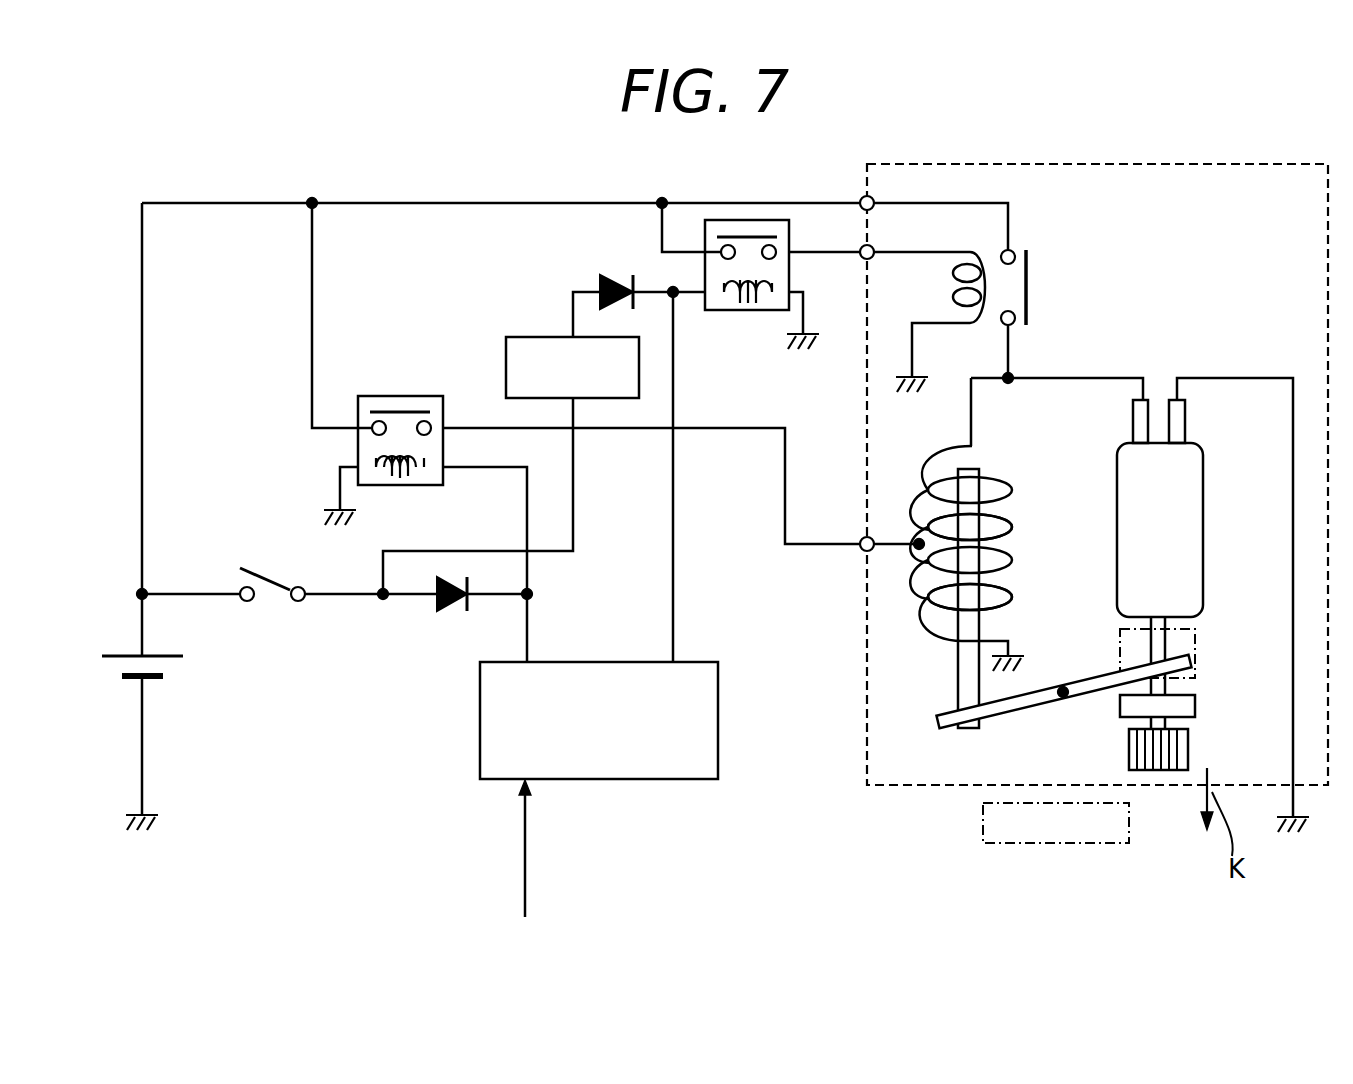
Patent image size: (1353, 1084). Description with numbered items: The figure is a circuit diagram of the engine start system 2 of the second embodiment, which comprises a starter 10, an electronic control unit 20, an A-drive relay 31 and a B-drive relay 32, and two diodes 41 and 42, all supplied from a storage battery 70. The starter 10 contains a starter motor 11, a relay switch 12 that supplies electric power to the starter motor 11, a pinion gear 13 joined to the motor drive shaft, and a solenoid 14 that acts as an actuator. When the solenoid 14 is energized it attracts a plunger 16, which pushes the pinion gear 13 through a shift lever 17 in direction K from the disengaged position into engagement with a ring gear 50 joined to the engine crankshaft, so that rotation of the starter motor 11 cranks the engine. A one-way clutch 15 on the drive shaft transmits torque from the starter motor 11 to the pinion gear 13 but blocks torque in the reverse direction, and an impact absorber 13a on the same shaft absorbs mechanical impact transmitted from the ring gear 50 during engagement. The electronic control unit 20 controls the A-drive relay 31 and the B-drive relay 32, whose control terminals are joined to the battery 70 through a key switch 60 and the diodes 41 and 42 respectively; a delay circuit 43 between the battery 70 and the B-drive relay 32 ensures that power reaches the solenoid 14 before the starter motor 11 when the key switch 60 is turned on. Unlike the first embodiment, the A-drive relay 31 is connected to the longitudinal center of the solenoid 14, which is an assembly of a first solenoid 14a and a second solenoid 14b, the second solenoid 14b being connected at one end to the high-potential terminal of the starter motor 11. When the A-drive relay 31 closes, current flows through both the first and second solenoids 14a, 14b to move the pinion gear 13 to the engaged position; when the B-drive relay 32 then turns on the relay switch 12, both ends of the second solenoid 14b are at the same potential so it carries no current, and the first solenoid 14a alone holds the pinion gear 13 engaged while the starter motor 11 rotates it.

The engine start system 2 is at (398, 795).
The starter 10 is at (905, 786).
The starter motor 11 is at (1205, 519).
The relay switch 12 is at (1014, 250).
The pinion gear 13 is at (1190, 750).
The impact absorber 13a is at (1196, 657).
The solenoid 14 is at (1005, 485).
The first solenoid 14a is at (1010, 602).
The second solenoid 14b is at (1012, 525).
The one-way clutch 15 is at (1196, 705).
The plunger 16 is at (958, 678).
The shift lever 17 is at (1070, 702).
The electronic control unit 20 is at (645, 782).
The A-drive relay 31 is at (358, 459).
The B-drive relay 32 is at (735, 312).
The diode 41 is at (448, 612).
The diode 42 is at (615, 277).
The delay circuit 43 is at (530, 336).
The ring gear 50 is at (1022, 845).
The key switch 60 is at (304, 602).
The storage battery 70 is at (108, 655).